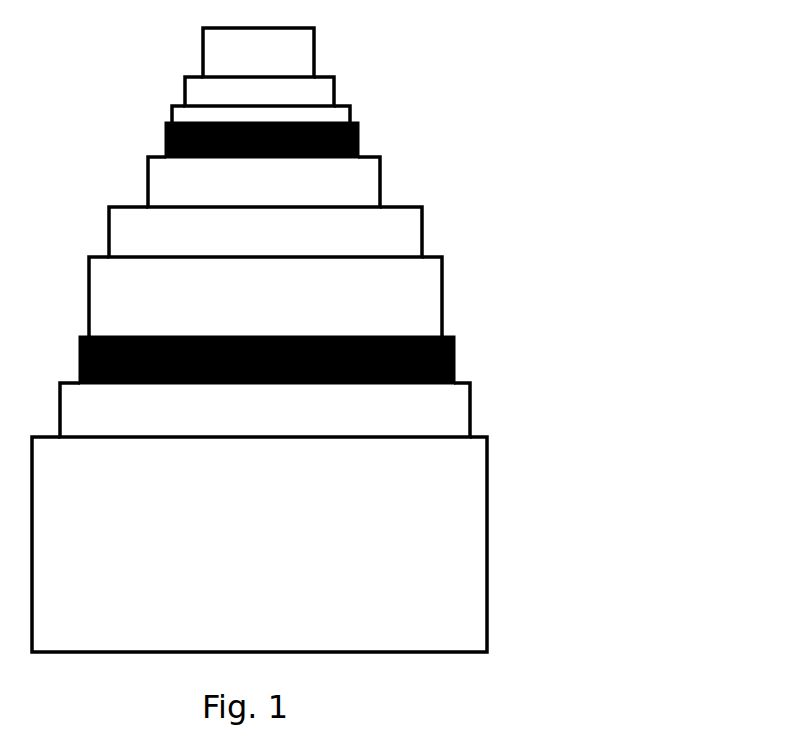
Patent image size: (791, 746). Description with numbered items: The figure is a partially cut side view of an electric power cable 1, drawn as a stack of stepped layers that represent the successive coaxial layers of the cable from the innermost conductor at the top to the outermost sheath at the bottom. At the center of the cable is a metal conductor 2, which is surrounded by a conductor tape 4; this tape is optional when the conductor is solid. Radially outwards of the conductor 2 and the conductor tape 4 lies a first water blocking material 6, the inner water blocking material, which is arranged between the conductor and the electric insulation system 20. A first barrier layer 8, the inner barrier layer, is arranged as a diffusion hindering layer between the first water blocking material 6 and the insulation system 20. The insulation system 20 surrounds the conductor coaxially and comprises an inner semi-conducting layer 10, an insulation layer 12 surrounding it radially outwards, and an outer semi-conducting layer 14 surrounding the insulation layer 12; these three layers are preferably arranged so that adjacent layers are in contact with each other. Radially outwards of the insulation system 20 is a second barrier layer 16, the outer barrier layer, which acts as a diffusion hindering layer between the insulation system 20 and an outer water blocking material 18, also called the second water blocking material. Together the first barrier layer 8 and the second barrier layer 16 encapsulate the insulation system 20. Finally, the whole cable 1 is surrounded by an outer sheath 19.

The electric power cable 1 is at (531, 98).
The metal conductor 2 is at (298, 58).
The conductor tape 4 is at (337, 83).
The first water blocking material 6 is at (342, 113).
The first barrier layer 8 is at (355, 133).
The inner semi-conducting layer 10 is at (362, 172).
The insulation layer 12 is at (400, 227).
The outer semi-conducting layer 14 is at (317, 297).
The second barrier layer 16 is at (455, 368).
The outer water blocking material 18 is at (452, 404).
The outer sheath 19 is at (452, 518).
The electric insulation system 20 is at (409, 247).